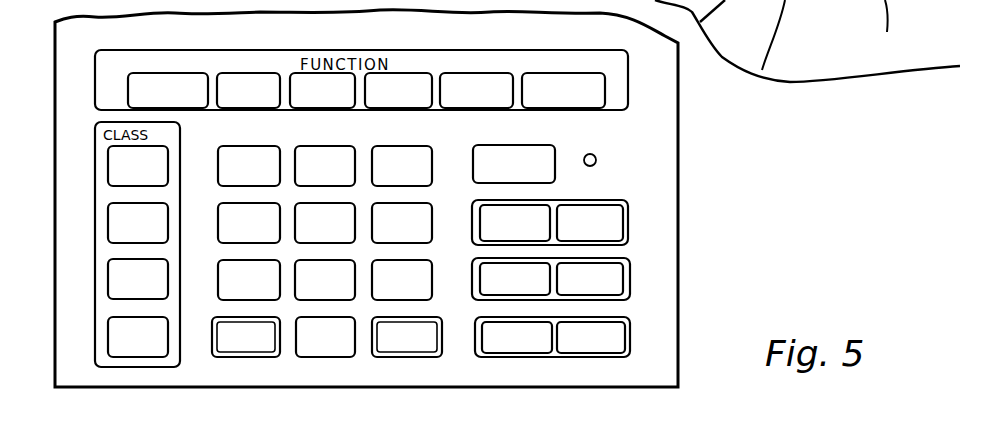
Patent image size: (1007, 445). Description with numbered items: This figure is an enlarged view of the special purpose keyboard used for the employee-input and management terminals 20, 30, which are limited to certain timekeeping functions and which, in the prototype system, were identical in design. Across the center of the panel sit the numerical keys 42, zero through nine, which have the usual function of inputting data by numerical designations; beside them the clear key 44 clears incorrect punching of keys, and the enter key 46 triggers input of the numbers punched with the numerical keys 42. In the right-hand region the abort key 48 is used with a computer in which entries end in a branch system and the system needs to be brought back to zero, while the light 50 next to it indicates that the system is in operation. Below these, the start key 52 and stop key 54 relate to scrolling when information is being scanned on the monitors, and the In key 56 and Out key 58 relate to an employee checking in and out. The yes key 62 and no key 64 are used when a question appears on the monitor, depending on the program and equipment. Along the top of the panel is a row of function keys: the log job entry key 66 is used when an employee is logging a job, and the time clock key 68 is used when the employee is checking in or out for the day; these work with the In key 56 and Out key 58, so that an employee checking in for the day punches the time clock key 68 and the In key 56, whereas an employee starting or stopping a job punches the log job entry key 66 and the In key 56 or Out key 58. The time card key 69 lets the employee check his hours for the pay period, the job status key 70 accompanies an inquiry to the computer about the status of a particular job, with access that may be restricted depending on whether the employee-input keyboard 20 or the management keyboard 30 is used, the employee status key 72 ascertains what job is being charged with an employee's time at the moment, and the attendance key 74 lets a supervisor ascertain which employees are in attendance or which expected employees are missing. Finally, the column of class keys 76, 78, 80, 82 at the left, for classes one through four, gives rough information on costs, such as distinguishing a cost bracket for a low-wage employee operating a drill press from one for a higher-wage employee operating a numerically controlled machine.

The employee-input keyboard terminal 20 is at (670, 320).
The management keyboard terminal 30 is at (366, 198).
The numerical keys 42 is at (378, 148).
The clear key 44 is at (242, 357).
The enter key 46 is at (410, 357).
The abort key 48 is at (540, 150).
The light 50 is at (596, 158).
The start key 52 is at (492, 209).
The stop key 54 is at (620, 226).
The In key 56 is at (498, 268).
The Out key 58 is at (620, 281).
The yes key 62 is at (503, 357).
The no key 64 is at (592, 357).
The log job entry key 66 is at (163, 73).
The time clock key 68 is at (240, 73).
The time card key 69 is at (296, 78).
The job status key 70 is at (426, 78).
The employee status key 72 is at (500, 78).
The attendance key 74 is at (568, 78).
The class key 76 is at (160, 162).
The class key 78 is at (160, 218).
The class key 80 is at (160, 278).
The class key 82 is at (150, 357).